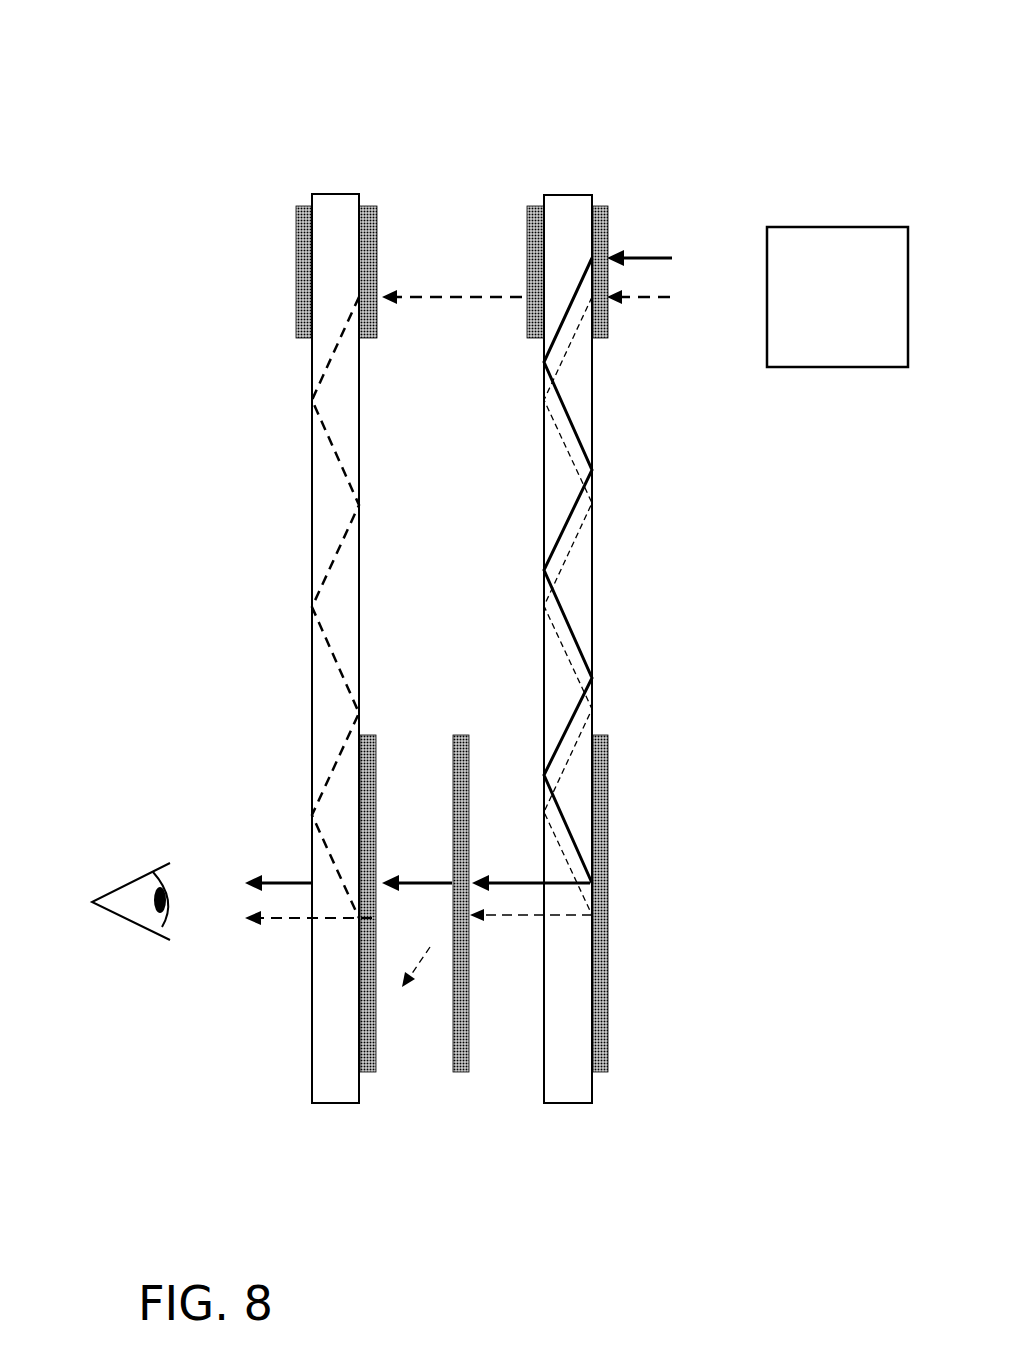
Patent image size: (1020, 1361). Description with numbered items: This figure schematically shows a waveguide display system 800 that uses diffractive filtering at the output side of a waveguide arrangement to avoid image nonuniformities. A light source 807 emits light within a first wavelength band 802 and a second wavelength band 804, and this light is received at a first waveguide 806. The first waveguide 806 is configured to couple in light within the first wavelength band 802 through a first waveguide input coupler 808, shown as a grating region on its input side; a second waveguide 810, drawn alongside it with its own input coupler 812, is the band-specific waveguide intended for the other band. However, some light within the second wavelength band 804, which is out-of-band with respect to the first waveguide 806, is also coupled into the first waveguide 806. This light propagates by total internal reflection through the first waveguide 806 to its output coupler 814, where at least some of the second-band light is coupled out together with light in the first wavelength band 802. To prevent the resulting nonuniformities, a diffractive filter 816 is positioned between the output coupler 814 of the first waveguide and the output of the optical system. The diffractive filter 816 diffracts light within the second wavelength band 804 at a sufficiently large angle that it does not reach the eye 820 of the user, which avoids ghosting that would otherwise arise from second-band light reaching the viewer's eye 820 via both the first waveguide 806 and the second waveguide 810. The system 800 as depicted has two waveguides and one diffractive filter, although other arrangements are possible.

The waveguide display system 800 is at (486, 28).
The first wavelength band 802 is at (685, 240).
The second wavelength band 804 is at (685, 278).
The first waveguide 806 is at (560, 194).
The light source 807 is at (817, 337).
The first waveguide input coupler 808 is at (600, 206).
The second waveguide 810 is at (338, 193).
The in-coupling grating of second waveguide 812 is at (365, 206).
The output coupler 814 is at (608, 886).
The diffractive filter 816 is at (457, 1072).
The eye 820 is at (118, 862).